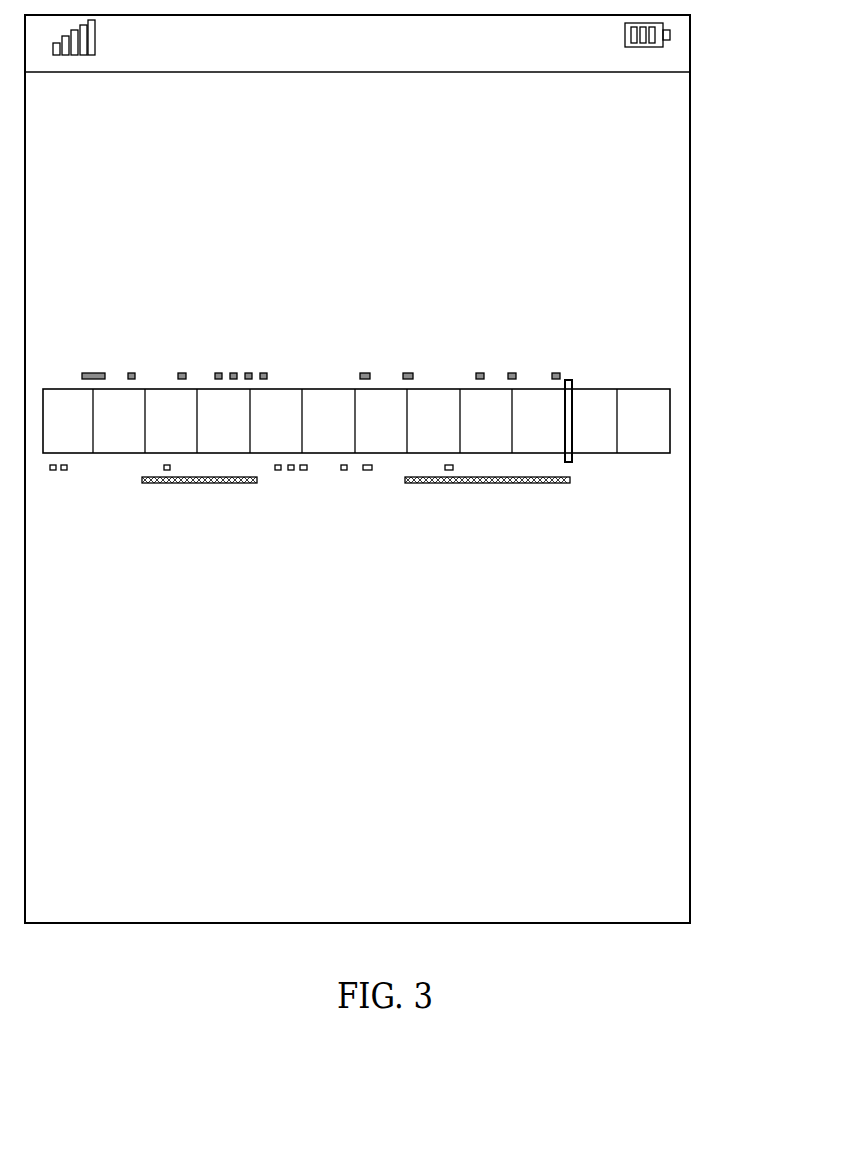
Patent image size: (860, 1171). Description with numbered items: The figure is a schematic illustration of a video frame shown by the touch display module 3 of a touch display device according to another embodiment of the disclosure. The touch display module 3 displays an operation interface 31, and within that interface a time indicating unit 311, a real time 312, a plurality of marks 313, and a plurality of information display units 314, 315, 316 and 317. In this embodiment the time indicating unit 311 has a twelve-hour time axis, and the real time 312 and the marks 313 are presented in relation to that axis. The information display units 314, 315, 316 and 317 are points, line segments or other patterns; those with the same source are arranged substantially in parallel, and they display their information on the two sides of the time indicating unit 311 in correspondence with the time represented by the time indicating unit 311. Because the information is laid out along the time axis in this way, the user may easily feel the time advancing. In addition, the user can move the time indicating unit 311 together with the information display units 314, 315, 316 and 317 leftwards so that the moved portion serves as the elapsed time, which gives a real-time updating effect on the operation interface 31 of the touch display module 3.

The touch display module 3 is at (691, 87).
The operation interface 31 is at (660, 153).
The time indicating unit 311 is at (670, 463).
The real time 312 is at (573, 462).
The marks 313 is at (617, 420).
The information display unit 314 is at (184, 374).
The information display unit 315 is at (345, 471).
The information display unit 316 is at (141, 480).
The information display unit 317 is at (412, 482).